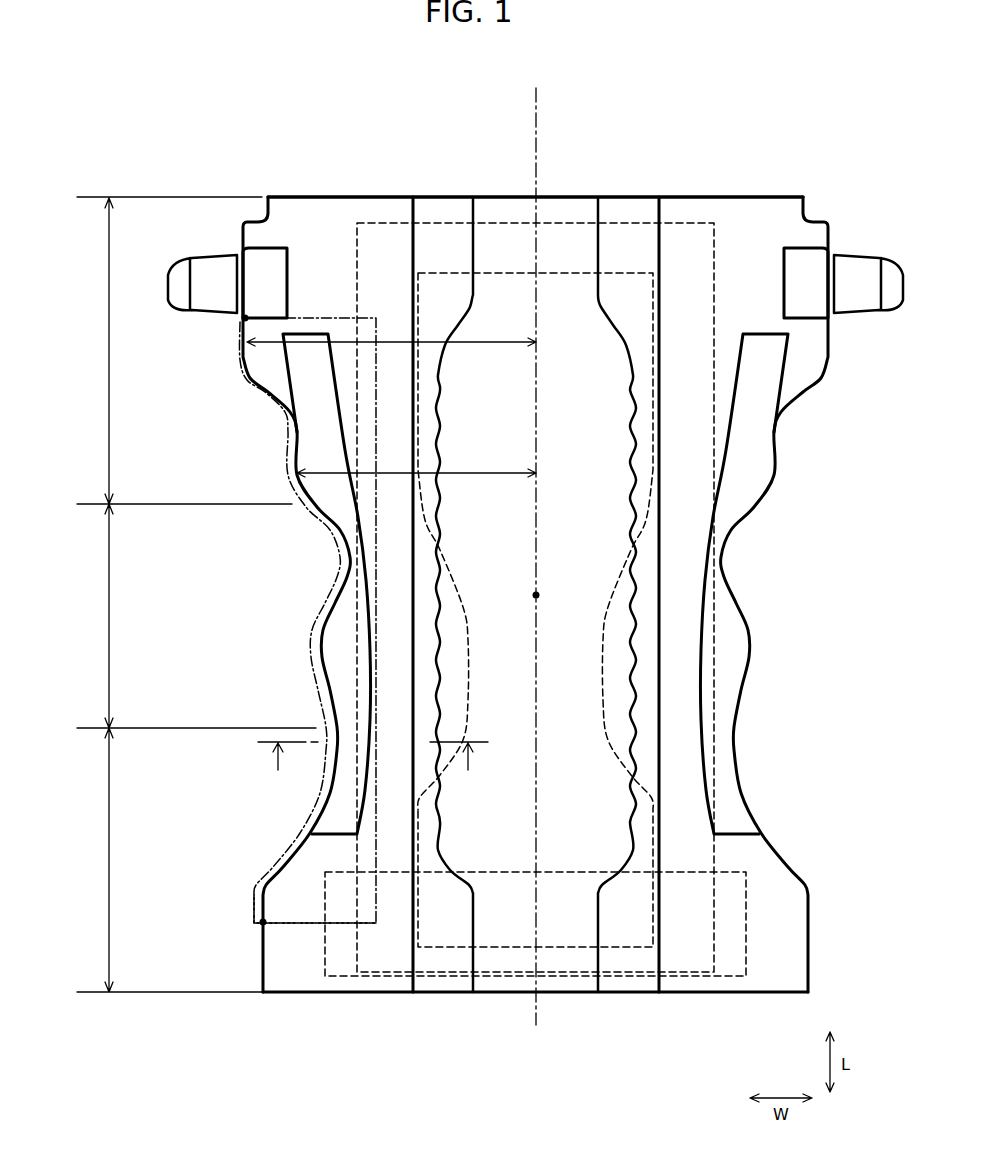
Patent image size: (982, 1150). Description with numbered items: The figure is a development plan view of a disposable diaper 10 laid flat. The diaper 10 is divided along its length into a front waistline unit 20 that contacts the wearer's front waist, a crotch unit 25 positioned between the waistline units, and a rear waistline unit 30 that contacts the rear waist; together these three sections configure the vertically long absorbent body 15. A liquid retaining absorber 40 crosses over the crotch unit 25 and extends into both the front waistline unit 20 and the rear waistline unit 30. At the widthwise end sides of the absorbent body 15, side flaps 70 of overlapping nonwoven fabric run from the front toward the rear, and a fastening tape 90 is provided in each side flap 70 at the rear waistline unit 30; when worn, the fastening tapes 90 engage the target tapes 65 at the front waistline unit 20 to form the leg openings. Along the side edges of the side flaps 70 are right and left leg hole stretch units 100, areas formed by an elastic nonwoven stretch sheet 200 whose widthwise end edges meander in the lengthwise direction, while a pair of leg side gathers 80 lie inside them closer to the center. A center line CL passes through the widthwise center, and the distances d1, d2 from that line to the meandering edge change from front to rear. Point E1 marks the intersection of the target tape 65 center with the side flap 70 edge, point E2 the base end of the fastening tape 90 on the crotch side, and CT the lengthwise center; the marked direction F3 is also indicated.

The disposable diaper 10 is at (762, 102).
The absorbent body 15 is at (514, 185).
The front waistline unit 20 is at (108, 862).
The crotch unit 25 is at (108, 618).
The rear waistline unit 30 is at (108, 352).
The absorber 40 is at (653, 372).
The target tape 65 is at (734, 873).
The side flap 70 is at (745, 230).
The leg side gather 80 is at (636, 245).
The fastening tape 90 is at (858, 268).
The leg hole stretch unit 100 is at (254, 902).
The stretch sheet 200 is at (280, 368).
The intersection point E1 is at (263, 922).
The base end of fastening tape E2 is at (245, 318).
The center line CL is at (541, 106).
The center CT is at (537, 595).
The distance d1 is at (480, 342).
The distance d2 is at (480, 473).
The force direction F3 is at (373, 777).